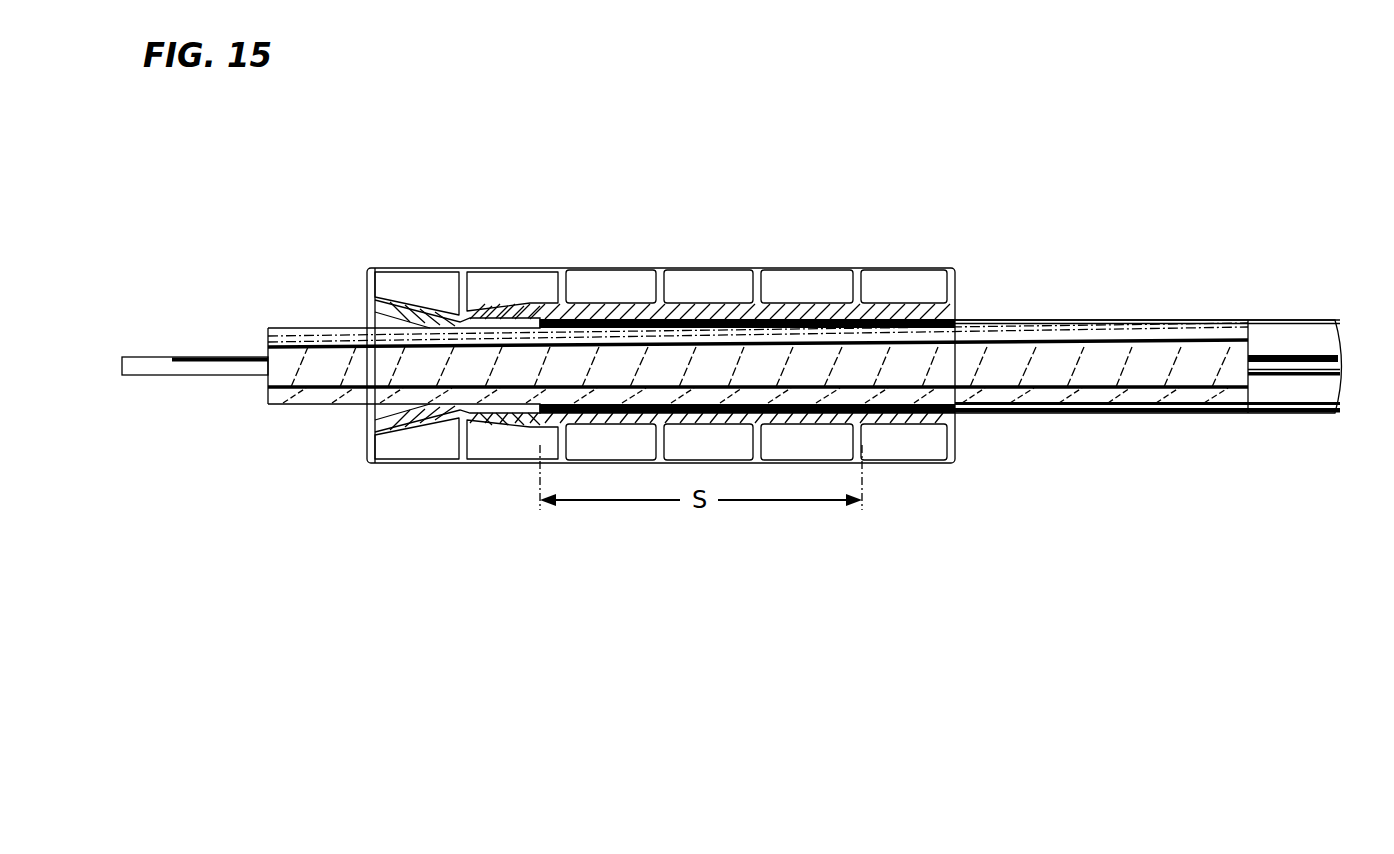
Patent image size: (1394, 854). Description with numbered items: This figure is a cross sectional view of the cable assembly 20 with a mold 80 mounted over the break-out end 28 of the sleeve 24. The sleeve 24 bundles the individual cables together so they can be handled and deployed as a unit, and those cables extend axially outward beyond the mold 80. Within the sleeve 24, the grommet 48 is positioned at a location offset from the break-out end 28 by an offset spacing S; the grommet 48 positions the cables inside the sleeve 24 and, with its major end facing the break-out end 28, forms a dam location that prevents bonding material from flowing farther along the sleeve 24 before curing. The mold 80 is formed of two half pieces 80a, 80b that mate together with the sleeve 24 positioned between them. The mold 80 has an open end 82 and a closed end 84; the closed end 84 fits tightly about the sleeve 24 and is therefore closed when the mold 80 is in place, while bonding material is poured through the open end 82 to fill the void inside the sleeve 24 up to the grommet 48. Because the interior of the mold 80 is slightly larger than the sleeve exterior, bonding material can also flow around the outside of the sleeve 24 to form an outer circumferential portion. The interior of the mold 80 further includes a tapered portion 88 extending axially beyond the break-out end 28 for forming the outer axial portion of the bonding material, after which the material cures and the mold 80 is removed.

The cable assembly 20 is at (1259, 300).
The sleeve 24 is at (1087, 318).
The break-out end 28 is at (308, 296).
The grommet 48 is at (833, 322).
The mold 80 is at (687, 357).
The mold half piece 80a is at (615, 268).
The mold half piece 80b is at (953, 465).
The open end 82 is at (368, 312).
The closed end 84 is at (958, 318).
The tapered portion 88 is at (520, 408).